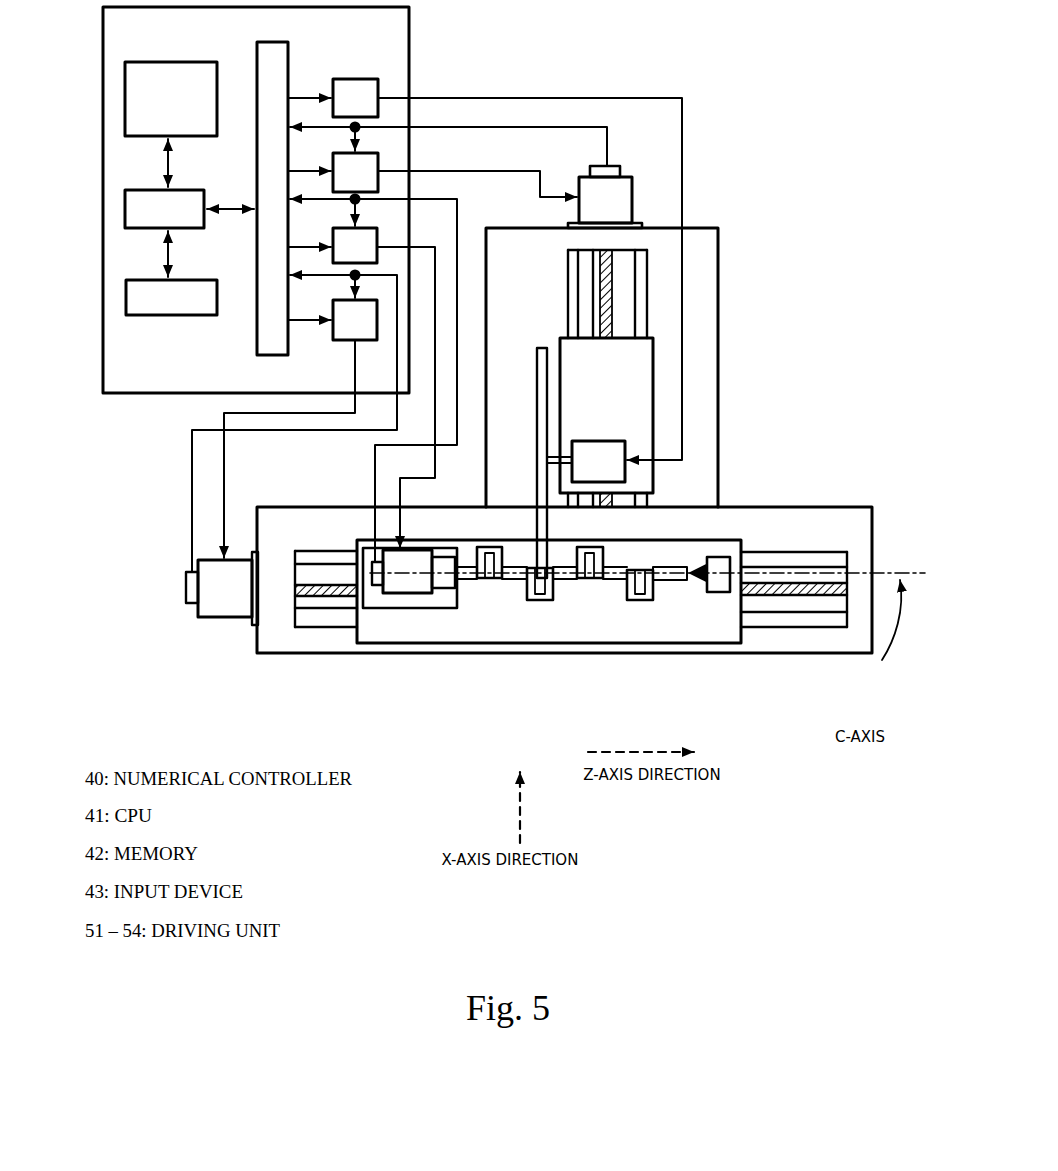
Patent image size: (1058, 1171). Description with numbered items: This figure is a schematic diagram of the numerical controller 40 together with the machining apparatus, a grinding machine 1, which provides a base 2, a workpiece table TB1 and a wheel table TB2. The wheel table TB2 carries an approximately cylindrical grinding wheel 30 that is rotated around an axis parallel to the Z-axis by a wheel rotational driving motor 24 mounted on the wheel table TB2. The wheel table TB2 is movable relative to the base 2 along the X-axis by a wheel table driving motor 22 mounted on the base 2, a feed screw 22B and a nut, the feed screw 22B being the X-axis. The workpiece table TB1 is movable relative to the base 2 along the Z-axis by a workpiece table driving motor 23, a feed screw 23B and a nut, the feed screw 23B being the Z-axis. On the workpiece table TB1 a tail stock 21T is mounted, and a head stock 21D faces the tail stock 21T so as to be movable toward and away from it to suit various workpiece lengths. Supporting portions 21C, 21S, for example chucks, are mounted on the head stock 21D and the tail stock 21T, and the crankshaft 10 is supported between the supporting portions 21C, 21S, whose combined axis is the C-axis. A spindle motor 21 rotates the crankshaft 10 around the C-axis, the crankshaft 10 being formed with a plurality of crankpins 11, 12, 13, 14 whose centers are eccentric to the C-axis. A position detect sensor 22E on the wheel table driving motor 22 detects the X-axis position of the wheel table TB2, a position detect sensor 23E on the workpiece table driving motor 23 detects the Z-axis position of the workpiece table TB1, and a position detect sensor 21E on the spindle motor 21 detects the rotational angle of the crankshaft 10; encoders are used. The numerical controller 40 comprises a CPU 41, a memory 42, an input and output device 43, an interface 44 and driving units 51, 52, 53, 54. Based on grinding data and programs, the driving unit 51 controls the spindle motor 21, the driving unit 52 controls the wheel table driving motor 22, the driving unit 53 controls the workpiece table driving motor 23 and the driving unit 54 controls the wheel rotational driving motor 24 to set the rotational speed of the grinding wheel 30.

The grinding machine 1 is at (764, 227).
The base 2 is at (702, 325).
The crankshaft 10 is at (661, 615).
The crankpin 11 is at (487, 582).
The crankpin 12 is at (540, 603).
The crankpin 13 is at (595, 582).
The crankpin 14 is at (640, 603).
The spindle motor 21 is at (405, 600).
The supporting portion 21C is at (413, 670).
The head stock 21D is at (448, 606).
The position detect sensor 21E is at (375, 588).
The supporting portion 21S is at (691, 568).
The tail stock 21T is at (720, 557).
The wheel table driving motor 22 is at (632, 196).
The feed screw 22B is at (612, 295).
The position detect sensor 22E is at (620, 170).
The workpiece table driving motor 23 is at (228, 617).
The feed screw 23B is at (325, 602).
The position detect sensor 23E is at (190, 603).
The wheel rotational driving motor 24 is at (628, 455).
The grinding wheel 30 is at (540, 347).
The numerical controller 40 is at (412, 30).
The CPU 41 is at (125, 208).
The memory 42 is at (125, 96).
The input and output device 43 is at (126, 298).
The interface 44 is at (257, 342).
The driving unit 51 is at (378, 235).
The driving unit 52 is at (378, 158).
The driving unit 53 is at (333, 342).
The driving unit 54 is at (378, 83).
The workpiece table TB1 is at (703, 630).
The wheel table TB2 is at (640, 364).